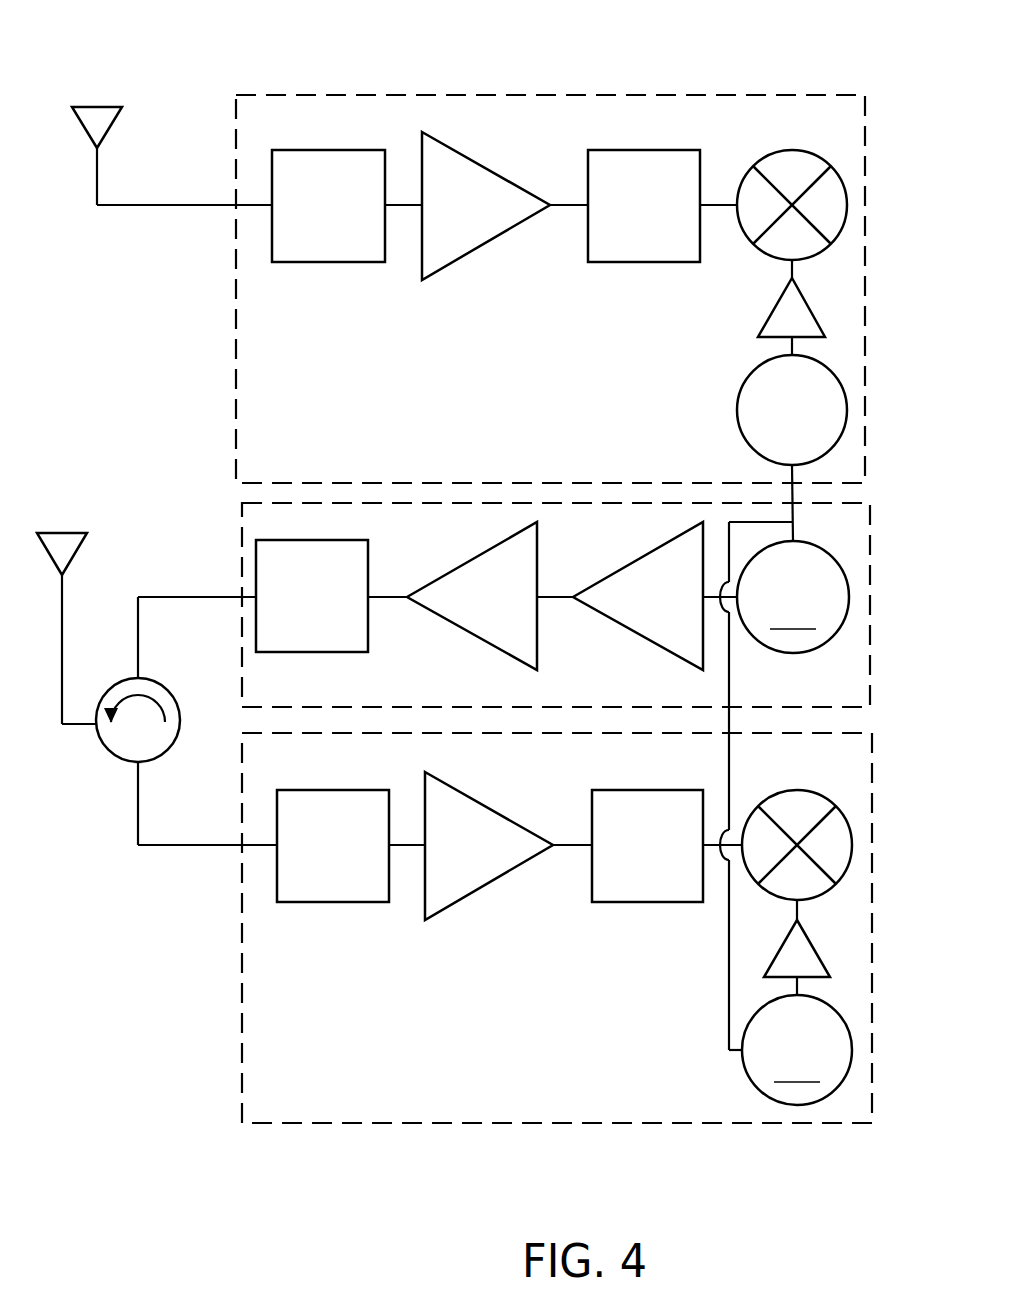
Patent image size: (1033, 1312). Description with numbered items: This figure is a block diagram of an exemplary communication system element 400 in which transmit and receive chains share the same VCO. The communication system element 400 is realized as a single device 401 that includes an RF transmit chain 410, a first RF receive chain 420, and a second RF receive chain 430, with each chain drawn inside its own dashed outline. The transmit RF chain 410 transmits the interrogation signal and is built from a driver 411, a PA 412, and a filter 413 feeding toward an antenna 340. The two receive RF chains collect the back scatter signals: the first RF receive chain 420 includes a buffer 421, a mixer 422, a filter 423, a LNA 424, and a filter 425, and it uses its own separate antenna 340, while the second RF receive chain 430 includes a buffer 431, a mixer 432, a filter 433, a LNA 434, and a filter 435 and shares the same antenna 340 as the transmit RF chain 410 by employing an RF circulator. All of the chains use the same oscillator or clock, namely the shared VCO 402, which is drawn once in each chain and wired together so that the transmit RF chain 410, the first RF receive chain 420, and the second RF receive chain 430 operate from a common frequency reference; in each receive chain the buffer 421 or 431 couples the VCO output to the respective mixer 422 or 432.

The communication system element 400 is at (122, 40).
The single device 401 is at (142, 66).
The antenna 340 is at (113, 144).
The first RF receive chain 420 is at (596, 600).
The filter 425 is at (307, 237).
The LNA 424 is at (440, 237).
The filter 423 is at (623, 237).
The mixer 422 is at (784, 147).
The buffer 421 is at (822, 303).
The shared VCO 402 is at (769, 442).
The RF transmit chain 410 is at (556, 666).
The filter 413 is at (291, 627).
The PA 412 is at (477, 627).
The driver 411 is at (636, 627).
The second RF receive chain 430 is at (597, 927).
The filter 435 is at (312, 877).
The LNA 434 is at (443, 877).
The filter 433 is at (626, 877).
The mixer 432 is at (805, 786).
The buffer 431 is at (819, 943).